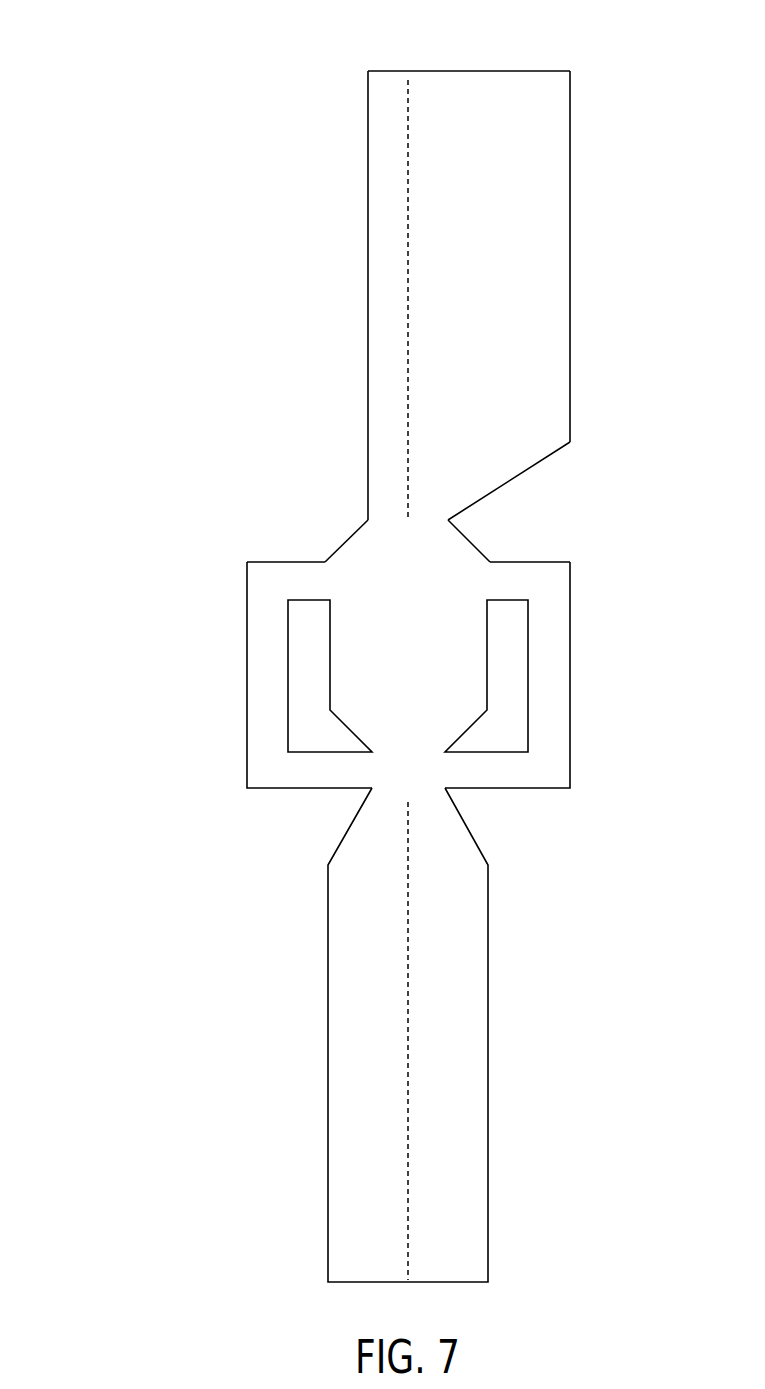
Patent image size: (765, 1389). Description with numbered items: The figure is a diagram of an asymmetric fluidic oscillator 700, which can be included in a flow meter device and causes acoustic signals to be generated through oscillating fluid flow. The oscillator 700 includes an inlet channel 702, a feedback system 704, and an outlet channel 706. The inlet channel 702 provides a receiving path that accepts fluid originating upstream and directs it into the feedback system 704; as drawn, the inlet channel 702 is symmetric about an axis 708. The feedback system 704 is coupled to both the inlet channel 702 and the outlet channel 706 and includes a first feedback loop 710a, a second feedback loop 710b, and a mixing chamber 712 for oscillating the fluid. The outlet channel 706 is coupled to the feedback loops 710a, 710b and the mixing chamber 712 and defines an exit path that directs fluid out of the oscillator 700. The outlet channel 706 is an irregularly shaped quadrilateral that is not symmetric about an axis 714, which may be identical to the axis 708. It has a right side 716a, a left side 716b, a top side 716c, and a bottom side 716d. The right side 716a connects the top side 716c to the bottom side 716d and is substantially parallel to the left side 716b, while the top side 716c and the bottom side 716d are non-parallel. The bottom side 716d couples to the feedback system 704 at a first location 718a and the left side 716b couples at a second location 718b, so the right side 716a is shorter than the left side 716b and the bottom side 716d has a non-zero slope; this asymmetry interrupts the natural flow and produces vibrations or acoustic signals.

The asymmetric fluidic oscillator 700 is at (118, 95).
The inlet channel 702 is at (490, 1020).
The feedback system 704 is at (186, 636).
The outlet channel 706 is at (469, 260).
The axis 708 is at (410, 1135).
The first feedback loop 710a is at (258, 746).
The second feedback loop 710b is at (555, 675).
The mixing chamber 712 is at (385, 585).
The axis 714 is at (408, 175).
The right side 716a is at (571, 287).
The left side 716b is at (368, 262).
The top side 716c is at (497, 70).
The bottom side 716d is at (533, 468).
The first location 718a is at (449, 520).
The second location 718b is at (368, 520).